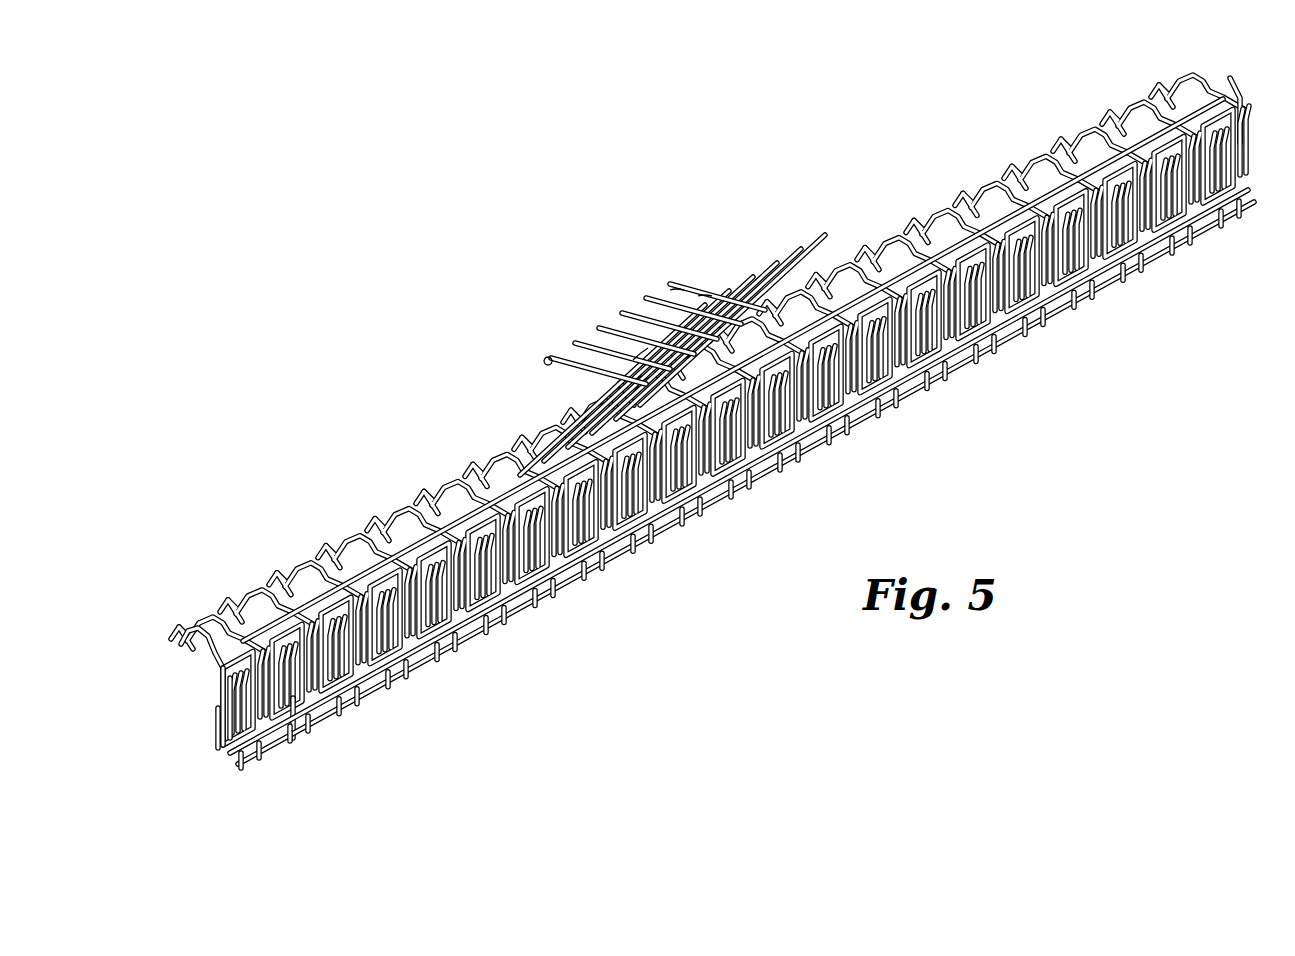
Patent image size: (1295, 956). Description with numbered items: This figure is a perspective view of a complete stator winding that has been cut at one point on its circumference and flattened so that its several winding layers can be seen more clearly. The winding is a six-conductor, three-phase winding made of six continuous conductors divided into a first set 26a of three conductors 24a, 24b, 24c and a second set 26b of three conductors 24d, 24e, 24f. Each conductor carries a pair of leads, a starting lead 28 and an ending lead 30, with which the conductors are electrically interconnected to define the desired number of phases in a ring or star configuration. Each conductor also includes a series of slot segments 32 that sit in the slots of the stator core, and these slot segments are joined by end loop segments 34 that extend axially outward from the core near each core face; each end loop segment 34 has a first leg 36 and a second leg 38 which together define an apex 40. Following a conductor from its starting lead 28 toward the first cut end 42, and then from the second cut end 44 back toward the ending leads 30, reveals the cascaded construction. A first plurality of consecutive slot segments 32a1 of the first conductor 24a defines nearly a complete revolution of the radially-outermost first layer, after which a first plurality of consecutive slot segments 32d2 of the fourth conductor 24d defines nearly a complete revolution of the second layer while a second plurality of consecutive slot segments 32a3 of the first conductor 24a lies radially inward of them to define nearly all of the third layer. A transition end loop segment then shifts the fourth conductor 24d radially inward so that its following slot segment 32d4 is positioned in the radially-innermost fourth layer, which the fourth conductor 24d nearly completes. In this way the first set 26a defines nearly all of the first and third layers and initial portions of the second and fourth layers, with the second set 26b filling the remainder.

The first conductor 24a is at (624, 305).
The second conductor 24b is at (648, 290).
The third conductor 24c is at (672, 276).
The fourth conductor 24d is at (552, 350).
The fifth conductor 24e is at (576, 335).
The sixth conductor 24f is at (600, 320).
The first set of conductors 26a is at (630, 346).
The second set of conductors 26b is at (665, 282).
The starting lead 28 is at (540, 352).
The ending lead 30 is at (825, 232).
The slot segment 32 is at (1240, 138).
The first plurality of consecutive slot segments of the first conductor 32a1 is at (214, 678).
The first plurality of consecutive slot segments of the fourth conductor 32d2 is at (215, 700).
The second plurality of consecutive slot segments of the first conductor 32a3 is at (210, 732).
The following slot segment of the fourth conductor 32d4 is at (286, 716).
The end loop segment 34 is at (1108, 105).
The first leg 36 is at (1120, 282).
The second leg 38 is at (1046, 312).
The apex 40 is at (1088, 296).
The first cut end 42 is at (1238, 110).
The second cut end 44 is at (205, 660).